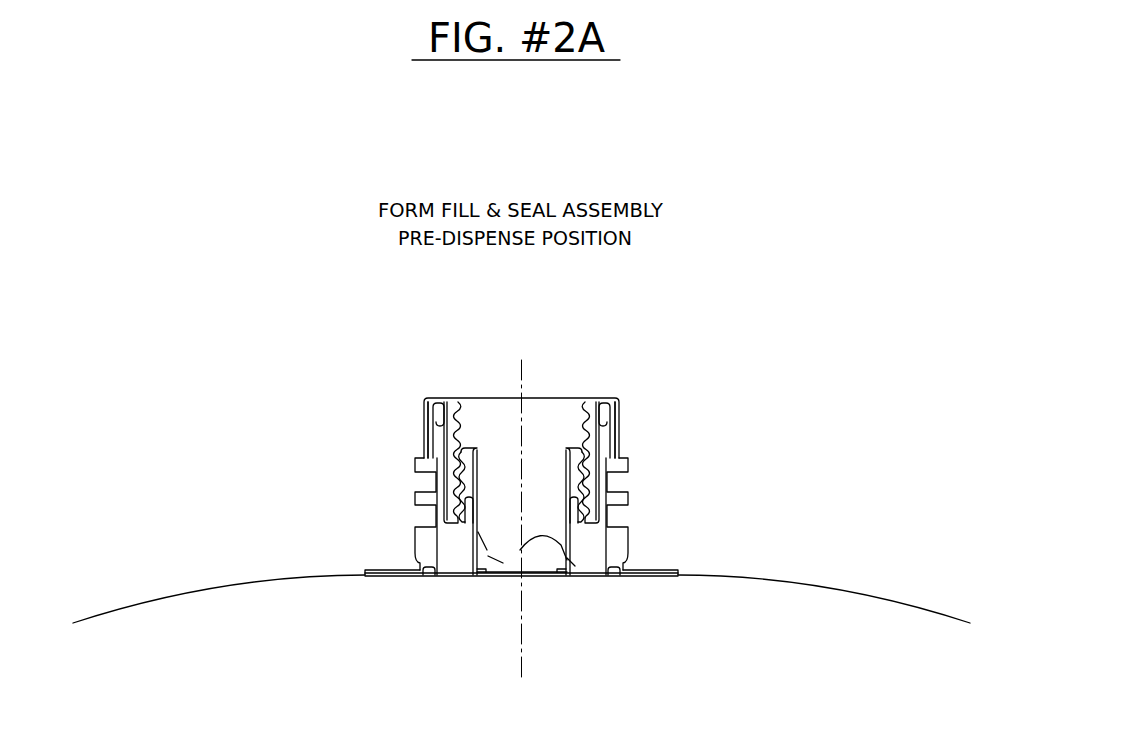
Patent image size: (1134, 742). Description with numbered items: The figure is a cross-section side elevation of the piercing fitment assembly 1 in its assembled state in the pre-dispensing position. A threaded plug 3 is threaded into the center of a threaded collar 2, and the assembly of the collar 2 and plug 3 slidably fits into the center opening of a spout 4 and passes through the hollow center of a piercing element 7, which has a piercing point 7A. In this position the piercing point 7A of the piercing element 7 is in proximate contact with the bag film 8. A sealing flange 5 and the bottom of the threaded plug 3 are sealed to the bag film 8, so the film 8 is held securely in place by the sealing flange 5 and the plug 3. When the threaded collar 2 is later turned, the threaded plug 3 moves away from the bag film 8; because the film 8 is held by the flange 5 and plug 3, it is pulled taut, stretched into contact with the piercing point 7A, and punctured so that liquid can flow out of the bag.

The piercing fitment assembly 1 is at (443, 393).
The threaded collar 2 is at (629, 427).
The threaded plug 3 is at (572, 470).
The spout 4 is at (417, 485).
The sealing flange 5 is at (653, 567).
The piercing element 7 is at (500, 556).
The piercing point 7A is at (522, 547).
The bag film 8 is at (355, 588).